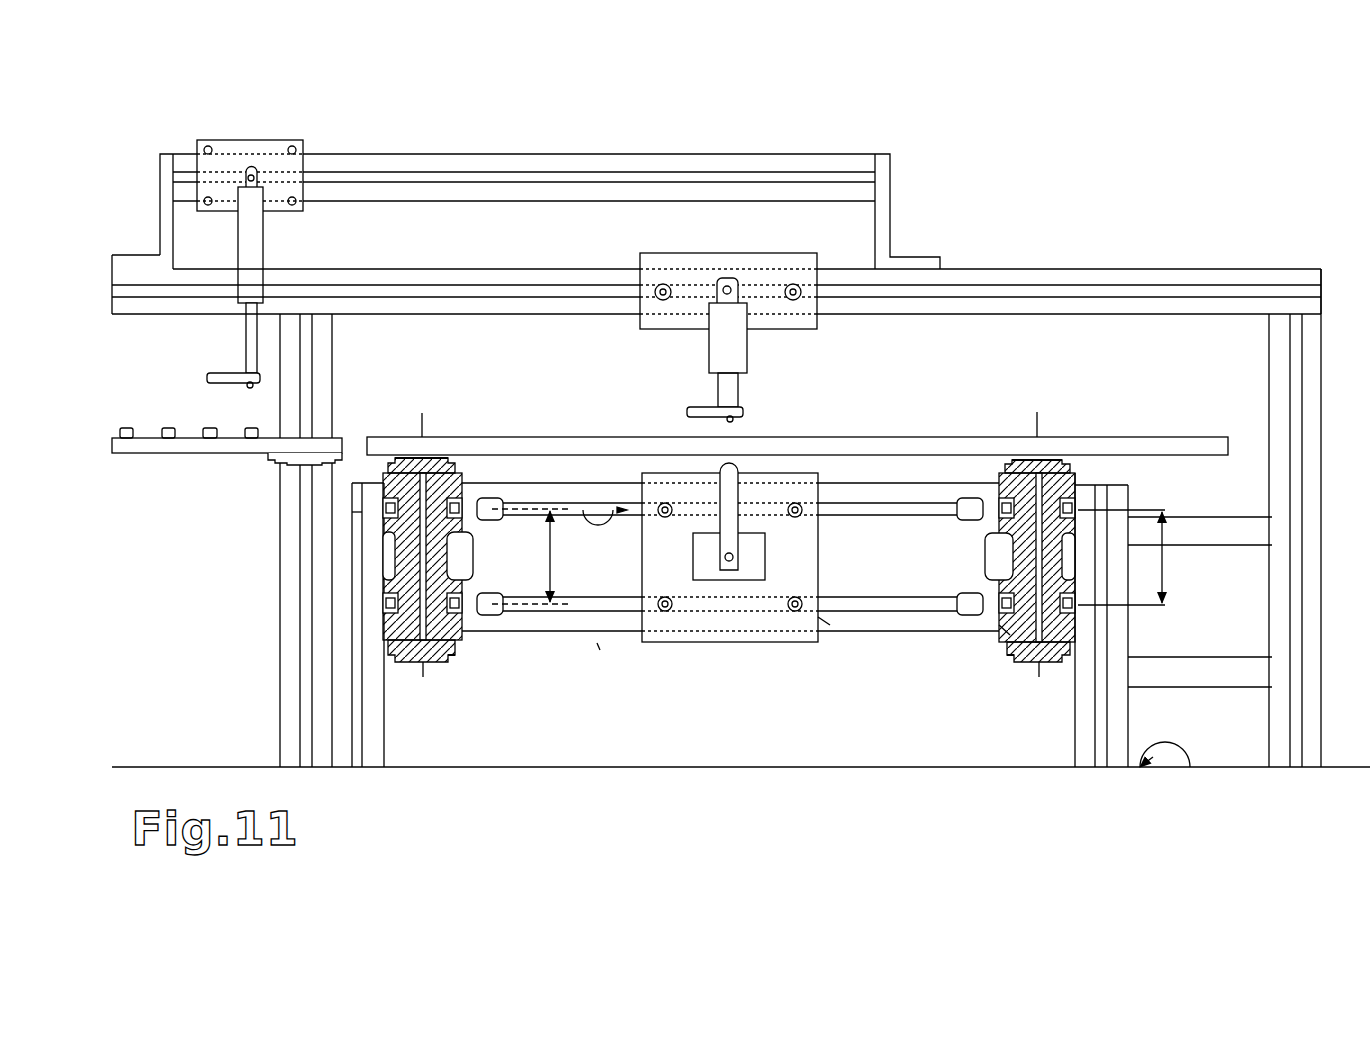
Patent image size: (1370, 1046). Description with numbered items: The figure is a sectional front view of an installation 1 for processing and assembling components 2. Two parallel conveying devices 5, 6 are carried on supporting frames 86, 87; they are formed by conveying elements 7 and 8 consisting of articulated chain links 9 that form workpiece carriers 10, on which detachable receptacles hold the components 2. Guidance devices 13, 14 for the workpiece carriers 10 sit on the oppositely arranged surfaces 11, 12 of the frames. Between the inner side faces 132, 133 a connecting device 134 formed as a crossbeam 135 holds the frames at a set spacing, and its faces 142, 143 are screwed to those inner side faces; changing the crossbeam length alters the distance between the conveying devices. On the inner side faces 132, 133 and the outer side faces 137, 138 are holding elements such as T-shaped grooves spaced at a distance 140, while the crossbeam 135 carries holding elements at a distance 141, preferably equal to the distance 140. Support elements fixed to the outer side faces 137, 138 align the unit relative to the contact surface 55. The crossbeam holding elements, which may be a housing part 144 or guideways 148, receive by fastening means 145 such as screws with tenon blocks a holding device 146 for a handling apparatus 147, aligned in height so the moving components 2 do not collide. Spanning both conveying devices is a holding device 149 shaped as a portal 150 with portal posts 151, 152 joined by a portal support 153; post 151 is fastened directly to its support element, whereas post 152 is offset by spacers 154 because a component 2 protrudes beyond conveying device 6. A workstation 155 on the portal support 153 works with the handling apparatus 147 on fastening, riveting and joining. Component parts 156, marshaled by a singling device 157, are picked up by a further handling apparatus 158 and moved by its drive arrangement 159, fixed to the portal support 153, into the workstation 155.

The installation 1 is at (1245, 140).
The components 2 is at (840, 443).
The conveying device 5 is at (418, 393).
The conveying device 6 is at (1082, 397).
The conveying element 7 is at (437, 452).
The conveying element 8 is at (1045, 455).
The chain links 9 is at (413, 665).
The workpiece carriers 10 is at (435, 665).
The surface 11 is at (1025, 457).
The surface 12 is at (1048, 665).
The guidance device 13 is at (470, 427).
The guidance device 14 is at (1047, 427).
The contact surface 55 is at (1186, 772).
The supporting frame 86 is at (465, 645).
The supporting frame 87 is at (1003, 643).
The inner side face 132 is at (465, 632).
The inner side face 133 is at (1000, 625).
The connecting device 134 is at (850, 657).
The crossbeam 135 is at (597, 643).
The outer side face 137 is at (385, 592).
The outer side face 138 is at (1077, 590).
The distance 140 is at (1162, 557).
The distance 141 is at (553, 553).
The face 142 is at (527, 556).
The face 143 is at (990, 560).
The housing part 144 is at (583, 618).
The fastening means 145 is at (665, 615).
The holding device 146 is at (805, 492).
The handling apparatus 147 is at (765, 462).
The guideways 148 is at (582, 502).
The holding device 149 is at (1030, 242).
The portal 150 is at (1290, 245).
The portal post 151 is at (322, 397).
The portal post 152 is at (1315, 435).
The portal support 153 is at (1145, 275).
The spacers 154 is at (1200, 675).
The workstation 155 is at (800, 230).
The component parts 156 is at (128, 428).
The singling device 157 is at (140, 482).
The handling apparatus 158 is at (340, 130).
The drive arrangement 159 is at (583, 140).